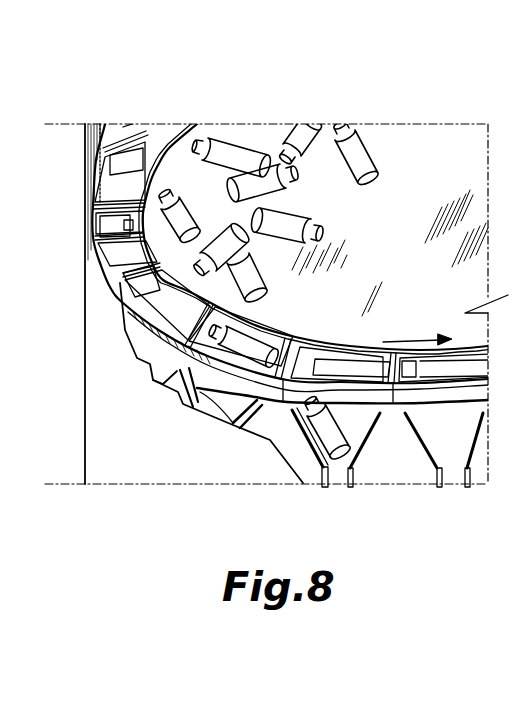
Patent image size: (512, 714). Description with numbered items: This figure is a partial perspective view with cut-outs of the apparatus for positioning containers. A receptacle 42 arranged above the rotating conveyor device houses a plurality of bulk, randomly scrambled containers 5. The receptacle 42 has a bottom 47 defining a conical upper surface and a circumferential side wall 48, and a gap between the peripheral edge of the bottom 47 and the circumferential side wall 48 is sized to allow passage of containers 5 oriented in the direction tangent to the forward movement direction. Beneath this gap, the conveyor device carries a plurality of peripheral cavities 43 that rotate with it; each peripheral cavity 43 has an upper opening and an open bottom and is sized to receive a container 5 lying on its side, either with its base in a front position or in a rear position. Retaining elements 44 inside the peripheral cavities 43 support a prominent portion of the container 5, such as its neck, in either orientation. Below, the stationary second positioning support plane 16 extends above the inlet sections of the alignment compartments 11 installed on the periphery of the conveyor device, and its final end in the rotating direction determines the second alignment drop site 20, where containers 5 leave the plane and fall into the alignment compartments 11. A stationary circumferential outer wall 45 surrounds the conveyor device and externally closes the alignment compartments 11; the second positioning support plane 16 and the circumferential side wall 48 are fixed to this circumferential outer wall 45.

The container 5 is at (237, 147).
The alignment compartment 11 is at (362, 458).
The second positioning support plane 16 is at (275, 400).
The second alignment drop site 20 is at (285, 437).
The receptacle 42 is at (400, 152).
The peripheral cavity 43 is at (125, 327).
The retaining element 44 is at (172, 313).
The circumferential outer wall 45 is at (85, 375).
The bottom 47 is at (447, 138).
The circumferential side wall 48 is at (85, 173).